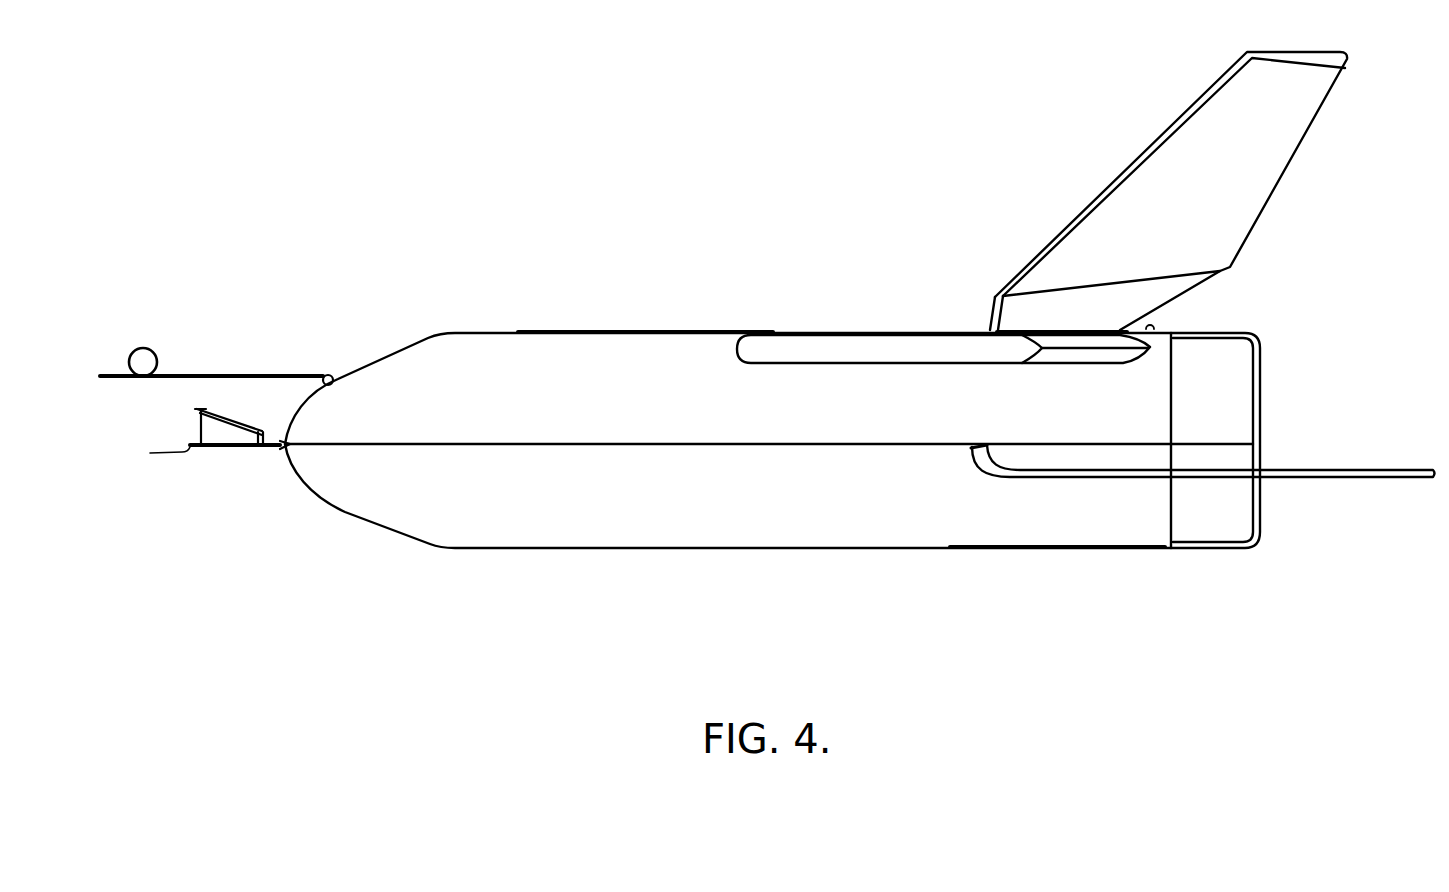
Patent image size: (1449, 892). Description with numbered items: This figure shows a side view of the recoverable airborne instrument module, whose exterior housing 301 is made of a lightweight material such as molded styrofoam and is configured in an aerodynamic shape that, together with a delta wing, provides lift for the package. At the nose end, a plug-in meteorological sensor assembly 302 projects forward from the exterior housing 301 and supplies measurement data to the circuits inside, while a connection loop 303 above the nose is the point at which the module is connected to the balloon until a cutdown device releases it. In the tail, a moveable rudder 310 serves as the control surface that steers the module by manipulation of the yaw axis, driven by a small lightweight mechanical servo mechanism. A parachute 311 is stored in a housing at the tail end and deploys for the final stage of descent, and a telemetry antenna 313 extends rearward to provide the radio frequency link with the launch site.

The exterior housing 301 is at (553, 332).
The plug-in meteorological sensor assembly 302 is at (211, 447).
The connection loop 303 is at (158, 350).
The rudder 310 is at (1157, 140).
The parachute 311 is at (868, 343).
The telemetry antenna 313 is at (1375, 478).